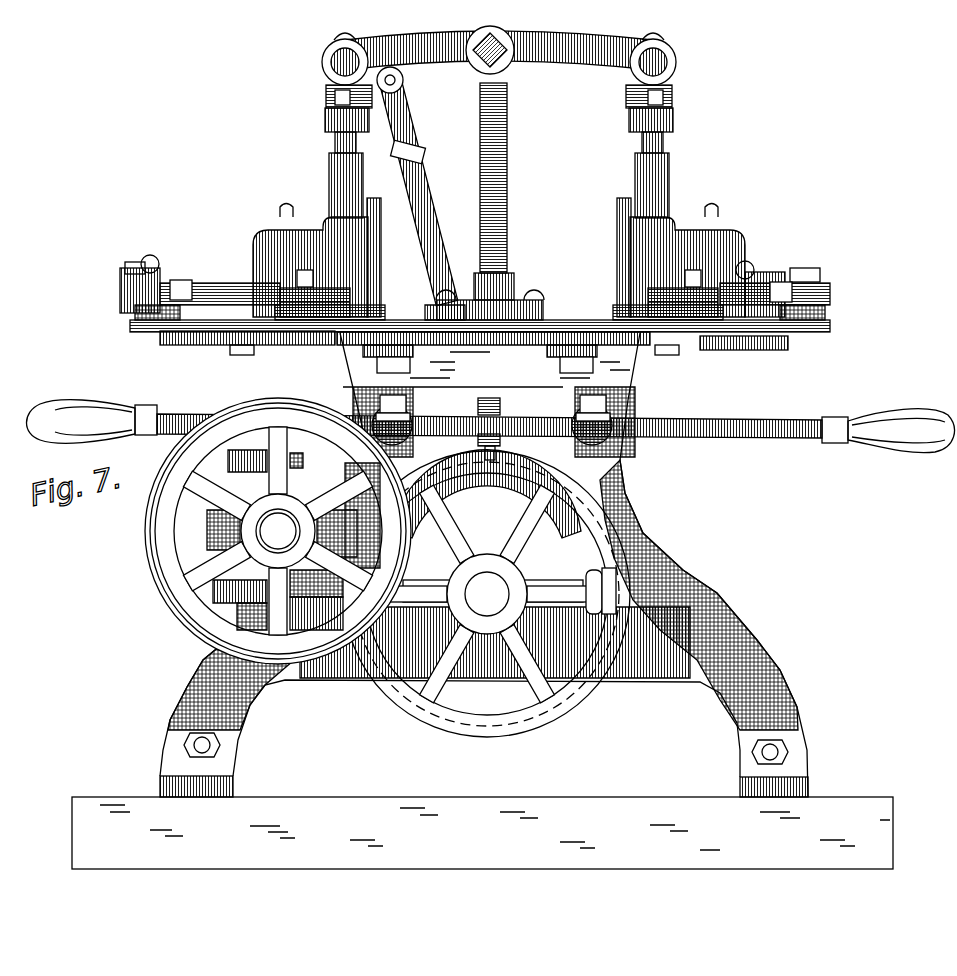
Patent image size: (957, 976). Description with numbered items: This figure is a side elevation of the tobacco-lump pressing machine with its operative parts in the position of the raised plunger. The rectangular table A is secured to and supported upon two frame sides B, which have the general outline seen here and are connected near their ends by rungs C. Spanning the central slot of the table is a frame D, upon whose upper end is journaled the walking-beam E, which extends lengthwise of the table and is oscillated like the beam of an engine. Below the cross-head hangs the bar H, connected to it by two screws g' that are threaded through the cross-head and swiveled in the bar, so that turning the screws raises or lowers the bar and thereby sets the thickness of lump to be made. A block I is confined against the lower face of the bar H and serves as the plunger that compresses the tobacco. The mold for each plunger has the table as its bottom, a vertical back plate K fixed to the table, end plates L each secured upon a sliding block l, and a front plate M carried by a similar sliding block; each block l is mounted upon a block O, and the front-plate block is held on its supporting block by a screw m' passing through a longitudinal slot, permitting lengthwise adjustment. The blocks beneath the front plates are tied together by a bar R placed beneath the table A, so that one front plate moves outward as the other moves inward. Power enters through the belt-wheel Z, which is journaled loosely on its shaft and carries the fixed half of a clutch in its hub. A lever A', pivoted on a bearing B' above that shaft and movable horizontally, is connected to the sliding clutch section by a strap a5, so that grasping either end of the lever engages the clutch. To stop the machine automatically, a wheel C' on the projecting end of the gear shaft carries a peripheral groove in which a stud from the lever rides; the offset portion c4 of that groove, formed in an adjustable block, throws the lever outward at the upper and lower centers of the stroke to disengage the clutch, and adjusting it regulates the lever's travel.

The table A is at (480, 342).
The lever A' is at (491, 417).
The frame side B is at (484, 564).
The bearing B' is at (492, 418).
The rung C is at (487, 594).
The wheel C' is at (504, 594).
The offset portion of groove c4 is at (601, 591).
The strap a5 is at (508, 436).
The belt-wheel Z is at (162, 576).
The frame D is at (496, 184).
The walking-beam E is at (570, 64).
The screw g' is at (480, 108).
The bar H is at (336, 147).
The block I is at (332, 190).
The vertical plate M is at (292, 212).
The vertical plate K is at (378, 268).
The vertical plate L is at (499, 267).
The block l is at (280, 292).
The block O is at (340, 310).
The screw m' is at (481, 284).
The bar R is at (250, 336).